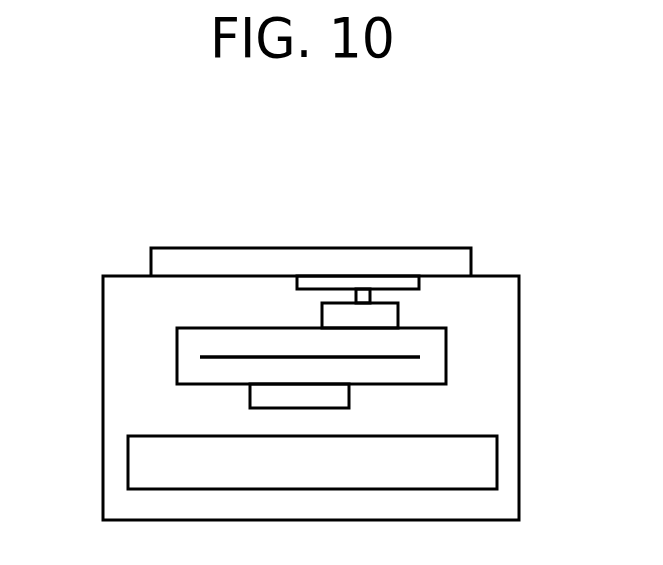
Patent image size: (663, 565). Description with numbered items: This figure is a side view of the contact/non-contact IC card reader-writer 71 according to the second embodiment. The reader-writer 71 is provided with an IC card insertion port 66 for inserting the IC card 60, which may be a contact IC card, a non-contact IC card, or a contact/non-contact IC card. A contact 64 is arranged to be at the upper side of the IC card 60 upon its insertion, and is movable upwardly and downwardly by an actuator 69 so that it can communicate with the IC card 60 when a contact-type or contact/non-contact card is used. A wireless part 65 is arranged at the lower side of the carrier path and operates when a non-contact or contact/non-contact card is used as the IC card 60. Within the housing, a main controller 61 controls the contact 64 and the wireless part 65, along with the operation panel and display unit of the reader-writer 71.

The contact/non-contact IC card reader-writer 71 is at (377, 250).
The actuator 69 is at (322, 286).
The contact 64 is at (398, 312).
The IC card insertion port 66 is at (436, 328).
The IC card 60 is at (420, 357).
The wireless part 65 is at (250, 395).
The main controller 61 is at (497, 459).